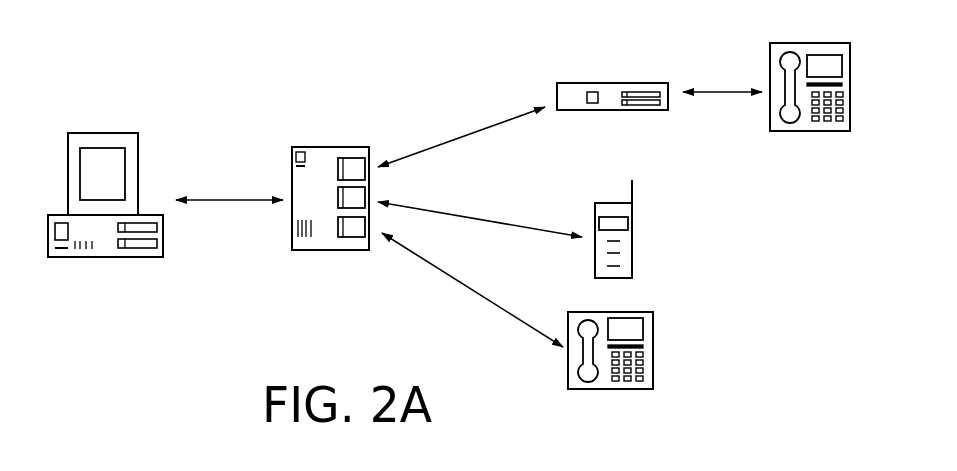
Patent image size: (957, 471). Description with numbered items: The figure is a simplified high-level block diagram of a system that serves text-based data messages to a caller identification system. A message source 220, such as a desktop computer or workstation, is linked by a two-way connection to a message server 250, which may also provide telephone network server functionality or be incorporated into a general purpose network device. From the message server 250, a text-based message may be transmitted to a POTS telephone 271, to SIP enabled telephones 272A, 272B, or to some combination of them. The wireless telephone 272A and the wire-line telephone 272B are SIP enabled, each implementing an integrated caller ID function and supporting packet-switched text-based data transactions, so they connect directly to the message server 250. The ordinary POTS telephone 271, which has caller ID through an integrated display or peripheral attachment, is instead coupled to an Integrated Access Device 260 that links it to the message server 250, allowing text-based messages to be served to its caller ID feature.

The message source 220 is at (108, 258).
The message server 250 is at (335, 147).
The Integrated Access Device 260 is at (637, 83).
The telephone 271 is at (828, 131).
The wireless telephone 272A is at (632, 242).
The wire-line telephone 272B is at (653, 348).